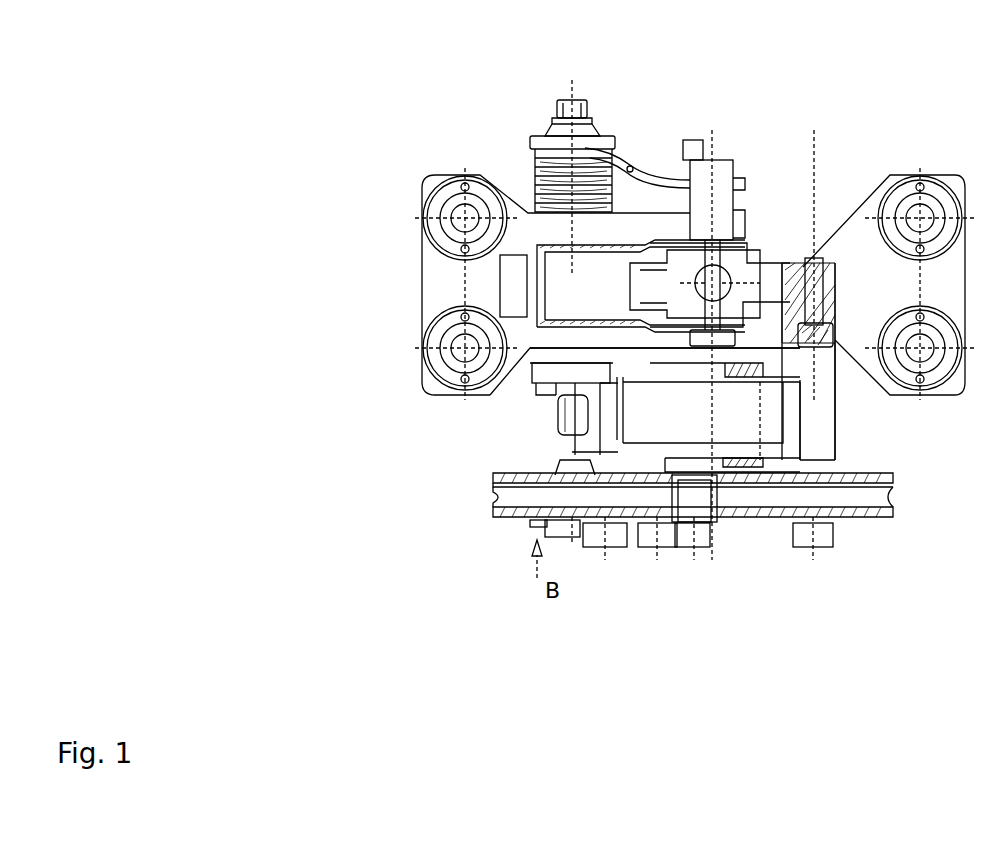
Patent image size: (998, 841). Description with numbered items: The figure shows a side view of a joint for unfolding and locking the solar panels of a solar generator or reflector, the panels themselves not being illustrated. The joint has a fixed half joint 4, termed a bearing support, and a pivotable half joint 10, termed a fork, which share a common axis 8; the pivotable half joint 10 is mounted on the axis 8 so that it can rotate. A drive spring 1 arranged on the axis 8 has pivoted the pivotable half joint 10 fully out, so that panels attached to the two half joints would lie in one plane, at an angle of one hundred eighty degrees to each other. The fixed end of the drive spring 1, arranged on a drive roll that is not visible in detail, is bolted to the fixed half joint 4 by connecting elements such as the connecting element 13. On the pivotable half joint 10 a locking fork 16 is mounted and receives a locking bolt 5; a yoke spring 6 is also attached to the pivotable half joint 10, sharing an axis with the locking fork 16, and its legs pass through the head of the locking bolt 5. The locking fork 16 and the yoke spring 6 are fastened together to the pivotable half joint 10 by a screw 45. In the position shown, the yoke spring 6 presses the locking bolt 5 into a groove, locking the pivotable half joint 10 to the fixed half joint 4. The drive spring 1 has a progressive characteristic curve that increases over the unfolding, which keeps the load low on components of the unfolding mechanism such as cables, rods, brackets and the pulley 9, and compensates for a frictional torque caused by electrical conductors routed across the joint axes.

The drive spring 1 is at (712, 422).
The fixed half joint 4 is at (868, 212).
The locking bolt 5 is at (702, 175).
The yoke spring 6 is at (632, 166).
The axis 8 is at (693, 553).
The pulley 9 is at (855, 493).
The pivotable half joint 10 is at (524, 216).
The connecting element 13 is at (820, 413).
The locking fork 16 is at (619, 300).
The screw 45 is at (560, 112).